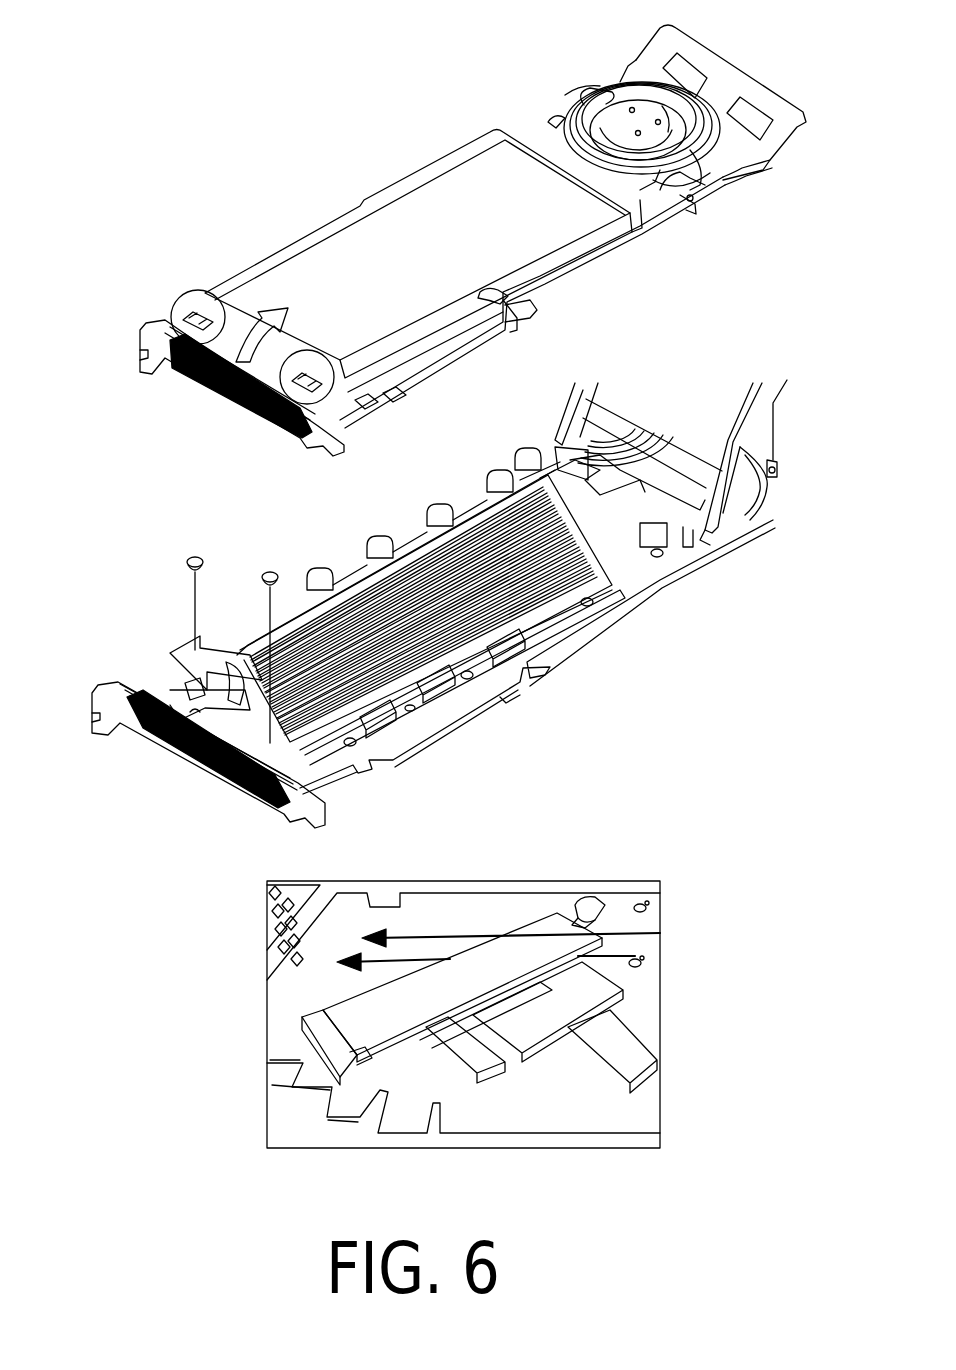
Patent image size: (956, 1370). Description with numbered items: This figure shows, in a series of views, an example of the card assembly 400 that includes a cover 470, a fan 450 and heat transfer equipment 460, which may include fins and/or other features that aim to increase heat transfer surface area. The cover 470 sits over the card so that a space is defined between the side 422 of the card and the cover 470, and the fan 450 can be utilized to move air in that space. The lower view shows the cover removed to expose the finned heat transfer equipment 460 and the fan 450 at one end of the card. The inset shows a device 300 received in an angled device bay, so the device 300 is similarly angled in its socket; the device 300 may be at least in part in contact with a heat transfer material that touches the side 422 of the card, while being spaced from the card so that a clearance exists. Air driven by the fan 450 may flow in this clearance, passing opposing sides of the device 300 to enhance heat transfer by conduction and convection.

The card assembly 400 is at (276, 170).
The cover 470 is at (410, 172).
The fan 450 is at (543, 97).
The heat transfer equipment 460 is at (365, 505).
The side 422 is at (480, 926).
The device 300 is at (378, 1007).